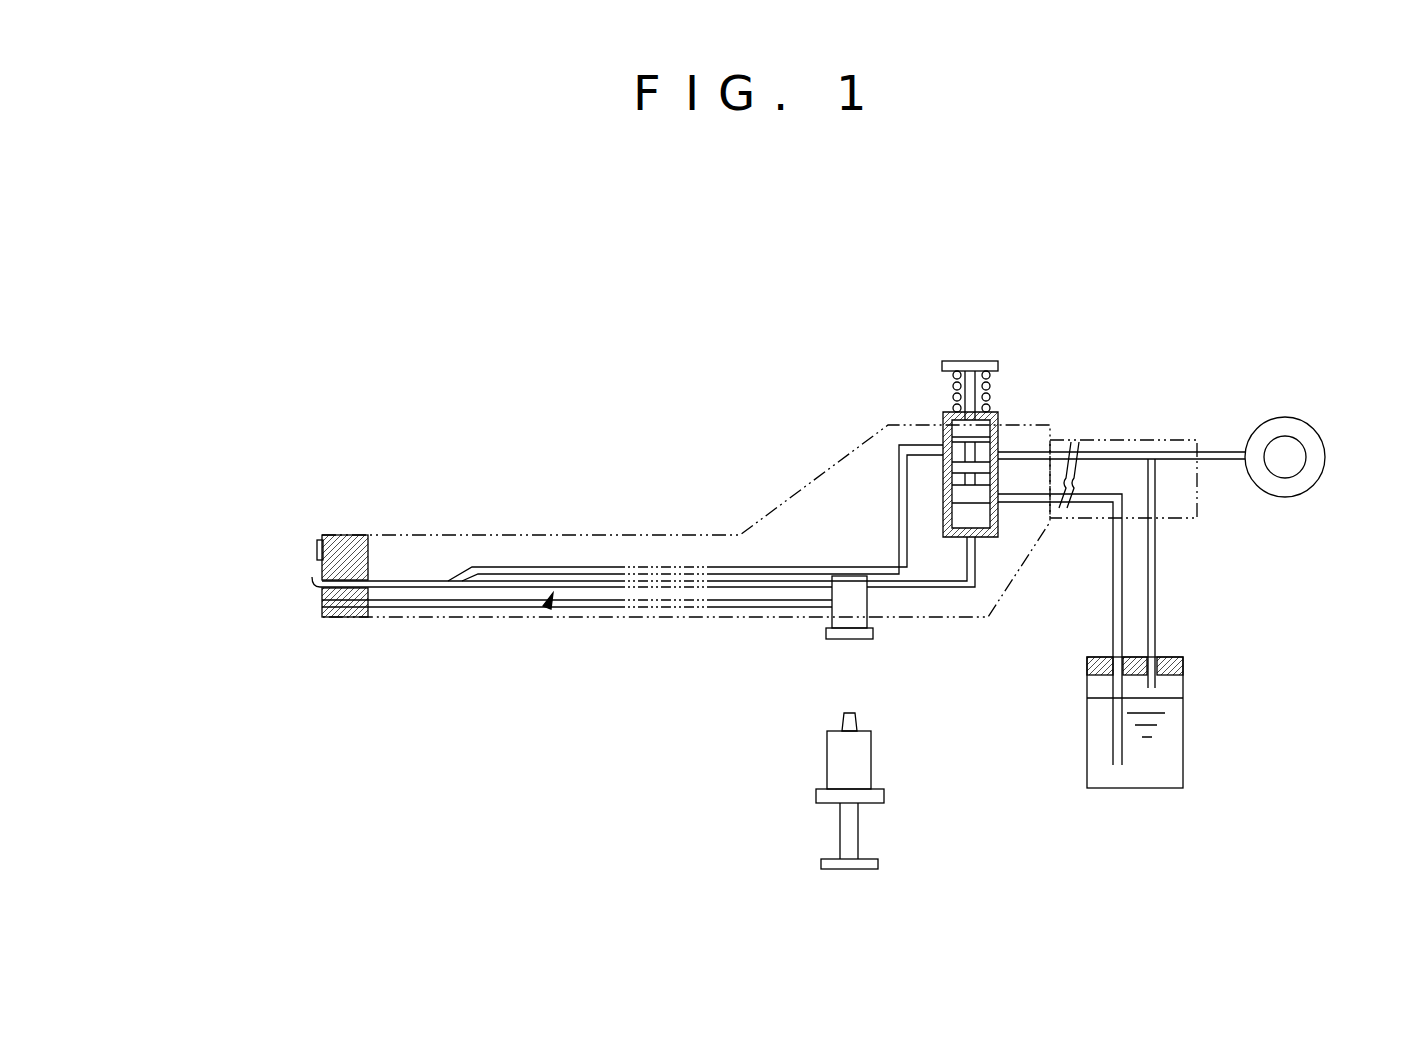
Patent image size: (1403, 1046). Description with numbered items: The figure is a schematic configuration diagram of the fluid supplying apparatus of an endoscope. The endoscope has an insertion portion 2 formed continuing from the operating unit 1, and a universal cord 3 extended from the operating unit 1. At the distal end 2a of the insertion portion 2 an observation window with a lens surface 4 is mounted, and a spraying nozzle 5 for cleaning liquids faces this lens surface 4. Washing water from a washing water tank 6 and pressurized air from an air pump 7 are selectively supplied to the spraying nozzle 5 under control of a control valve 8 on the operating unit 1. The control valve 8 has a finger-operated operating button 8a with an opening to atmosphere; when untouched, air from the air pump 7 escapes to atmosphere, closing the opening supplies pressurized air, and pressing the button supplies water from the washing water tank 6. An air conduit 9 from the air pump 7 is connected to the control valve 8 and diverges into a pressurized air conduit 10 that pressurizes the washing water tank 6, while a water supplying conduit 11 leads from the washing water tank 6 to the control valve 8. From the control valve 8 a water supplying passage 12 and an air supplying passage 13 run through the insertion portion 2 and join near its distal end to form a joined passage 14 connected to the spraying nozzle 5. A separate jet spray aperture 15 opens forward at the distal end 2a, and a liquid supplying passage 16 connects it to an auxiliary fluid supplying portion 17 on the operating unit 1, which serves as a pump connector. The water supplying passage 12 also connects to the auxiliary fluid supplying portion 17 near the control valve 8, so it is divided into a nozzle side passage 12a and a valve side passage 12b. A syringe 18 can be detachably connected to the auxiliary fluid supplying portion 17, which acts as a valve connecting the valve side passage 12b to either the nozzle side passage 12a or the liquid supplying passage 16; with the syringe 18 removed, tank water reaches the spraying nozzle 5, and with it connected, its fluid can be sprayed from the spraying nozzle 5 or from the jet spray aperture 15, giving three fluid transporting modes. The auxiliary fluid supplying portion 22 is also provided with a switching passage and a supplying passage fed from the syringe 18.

The operating unit 1 is at (759, 553).
The insertion portion 2 is at (460, 535).
The distal end 2a is at (350, 538).
The universal cord 3 is at (1172, 438).
The lens surface 4 is at (317, 548).
The spraying nozzle 5 is at (312, 578).
The washing water tank 6 is at (1183, 765).
The air pump 7 is at (1310, 420).
The control valve 8 is at (943, 412).
The operating button 8a is at (970, 363).
The air conduit 9 is at (1030, 455).
The pressurized air conduit 10 is at (1155, 542).
The water supplying conduit 11 is at (1120, 605).
The water supplying passage 12 is at (549, 607).
The nozzle side passage 12a is at (708, 583).
The valve side passage 12b is at (918, 588).
The air supplying passage 13 is at (763, 563).
The joined passage 14 is at (428, 585).
The jet spray aperture 15 is at (322, 607).
The liquid supplying passage 16 is at (728, 603).
The auxiliary fluid supplying portion 17 is at (847, 583).
The syringe 18 is at (828, 775).
The auxiliary fluid supplying portion 22 is at (845, 638).